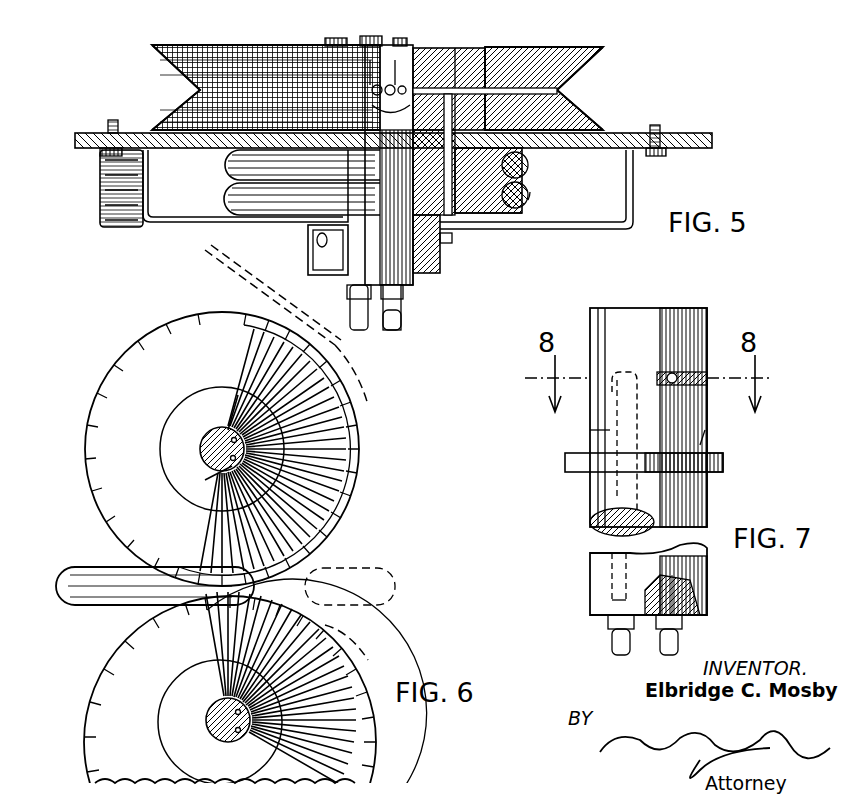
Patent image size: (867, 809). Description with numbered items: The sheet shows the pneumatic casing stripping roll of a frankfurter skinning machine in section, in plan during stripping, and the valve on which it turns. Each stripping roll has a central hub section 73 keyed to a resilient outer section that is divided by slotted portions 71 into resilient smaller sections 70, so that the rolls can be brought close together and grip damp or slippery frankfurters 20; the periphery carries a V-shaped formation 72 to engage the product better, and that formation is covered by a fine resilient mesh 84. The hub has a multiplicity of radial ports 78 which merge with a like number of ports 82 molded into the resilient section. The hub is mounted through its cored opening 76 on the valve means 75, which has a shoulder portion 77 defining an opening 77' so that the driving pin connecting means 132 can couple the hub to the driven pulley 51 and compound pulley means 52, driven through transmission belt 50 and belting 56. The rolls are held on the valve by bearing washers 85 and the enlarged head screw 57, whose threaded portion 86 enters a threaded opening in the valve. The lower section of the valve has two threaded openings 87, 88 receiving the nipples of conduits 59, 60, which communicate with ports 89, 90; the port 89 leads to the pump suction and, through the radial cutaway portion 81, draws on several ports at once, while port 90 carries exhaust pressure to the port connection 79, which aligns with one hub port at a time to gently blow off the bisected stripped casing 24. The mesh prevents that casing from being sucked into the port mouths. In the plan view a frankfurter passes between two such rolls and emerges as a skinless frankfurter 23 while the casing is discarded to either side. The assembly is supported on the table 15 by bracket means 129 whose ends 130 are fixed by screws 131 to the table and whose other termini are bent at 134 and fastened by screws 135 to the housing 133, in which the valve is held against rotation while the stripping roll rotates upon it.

In FIG. 5, the table 15 is at (700, 135).
In FIG. 6, the frankfurters 20 is at (75, 565).
In FIG. 6, the skinless frankfurter 23 is at (392, 568).
In FIG. 6, the stripped casing 24 is at (365, 642).
In FIG. 5, the transmission belt 50 is at (530, 170).
In FIG. 5, the driven pulley 51 is at (530, 160).
In FIG. 5, the compound pulley means 52 is at (510, 215).
In FIG. 5, the belting 56 is at (531, 200).
In FIG. 5, the enlarged head screw 57 is at (372, 36).
In FIG. 5, the conduit 59 is at (396, 325).
In FIG. 7, the conduit 59 is at (682, 642).
In FIG. 5, the conduit 60 is at (352, 312).
In FIG. 7, the conduit 60 is at (610, 645).
In FIG. 5, the resilient smaller sections 70 is at (588, 47).
In FIG. 6, the resilient smaller sections 70 is at (330, 642).
In FIG. 5, the slotted portions 71 is at (258, 47).
In FIG. 6, the slotted portions 71 is at (95, 662).
In FIG. 5, the V-shaped formation 72 is at (196, 90).
In FIG. 5, the central hub section 73 is at (478, 55).
In FIG. 6, the central hub section 73 is at (170, 680).
In FIG. 5, the valve means 75 is at (372, 290).
In FIG. 6, the valve means 75 is at (208, 718).
In FIG. 7, the valve means 75 is at (680, 310).
In FIG. 5, the cored opening 76 is at (432, 58).
In FIG. 7, the shoulder portion 77 is at (621, 481).
In FIG. 5, the opening 77' is at (282, 182).
In FIG. 5, the ports 78 is at (452, 58).
In FIG. 6, the ports 78 is at (206, 468).
In FIG. 7, the port connection 79 is at (612, 365).
In FIG. 7, the cutaway portion 81 is at (706, 372).
In FIG. 5, the ports 82 is at (548, 50).
In FIG. 6, the ports 82 is at (345, 755).
In FIG. 5, the resilient mesh 84 is at (580, 108).
In FIG. 5, the bearing washers 85 is at (330, 38).
In FIG. 5, the threaded portion 86 is at (400, 38).
In FIG. 7, the threaded opening 87 is at (712, 592).
In FIG. 7, the threaded opening 88 is at (628, 596).
In FIG. 7, the port 89 is at (705, 445).
In FIG. 7, the port 90 is at (590, 432).
In FIG. 5, the bracket means 129 is at (166, 224).
In FIG. 5, the ends 130 is at (668, 153).
In FIG. 5, the screws 131 is at (653, 150).
In FIG. 5, the driving pin connecting means 132 is at (462, 190).
In FIG. 5, the housing 133 is at (428, 275).
In FIG. 5, the bent termini 134 is at (440, 270).
In FIG. 5, the screws 135 is at (452, 238).